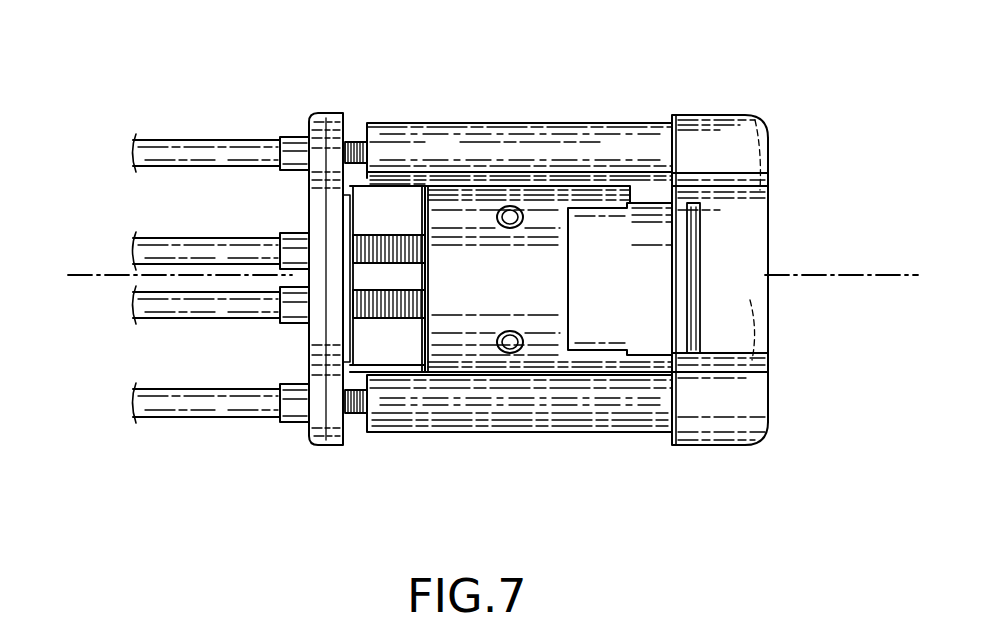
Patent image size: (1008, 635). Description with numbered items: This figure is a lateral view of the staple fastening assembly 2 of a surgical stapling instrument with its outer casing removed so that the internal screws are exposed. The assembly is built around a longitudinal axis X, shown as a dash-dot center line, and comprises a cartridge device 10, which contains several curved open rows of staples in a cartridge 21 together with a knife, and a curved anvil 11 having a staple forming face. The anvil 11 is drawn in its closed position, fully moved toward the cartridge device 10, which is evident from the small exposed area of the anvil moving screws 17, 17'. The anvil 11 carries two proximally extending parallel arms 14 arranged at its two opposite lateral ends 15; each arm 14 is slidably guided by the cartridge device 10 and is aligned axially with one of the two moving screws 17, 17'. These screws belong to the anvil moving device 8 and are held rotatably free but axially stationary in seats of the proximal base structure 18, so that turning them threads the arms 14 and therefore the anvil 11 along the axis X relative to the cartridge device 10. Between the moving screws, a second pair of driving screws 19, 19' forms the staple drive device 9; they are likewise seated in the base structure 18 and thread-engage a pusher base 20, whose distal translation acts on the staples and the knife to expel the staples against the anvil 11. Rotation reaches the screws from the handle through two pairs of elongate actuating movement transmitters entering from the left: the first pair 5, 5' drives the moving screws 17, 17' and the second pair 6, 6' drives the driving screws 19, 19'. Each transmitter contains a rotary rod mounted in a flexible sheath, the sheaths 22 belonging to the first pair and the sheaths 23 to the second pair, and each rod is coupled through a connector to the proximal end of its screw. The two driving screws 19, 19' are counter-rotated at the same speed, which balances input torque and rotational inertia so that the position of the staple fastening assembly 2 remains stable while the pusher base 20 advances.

The staple fastening assembly 2 is at (499, 104).
The elongate actuating movement transmitter 5 is at (207, 125).
The elongate actuating movement transmitter 5' is at (207, 443).
The elongate actuating movement transmitter 6 is at (187, 229).
The elongate actuating movement transmitter 6' is at (191, 326).
The anvil moving device 8 is at (400, 148).
The staple drive device 9 is at (453, 237).
The cartridge device 10 is at (593, 315).
The anvil 11 is at (765, 255).
The anvil arm 14 is at (555, 140).
The lateral end of the anvil 15 is at (685, 106).
The moving screw 17 is at (352, 103).
The moving screw 17' is at (351, 453).
The proximal base structure 18 is at (317, 444).
The driving screw 19 is at (389, 231).
The driving screw 19' is at (389, 325).
The pusher base 20 is at (460, 317).
The cartridge 21 is at (643, 320).
The flexible sheath 22 is at (205, 150).
The flexible sheath 23 is at (200, 243).
The longitudinal axis X is at (72, 279).